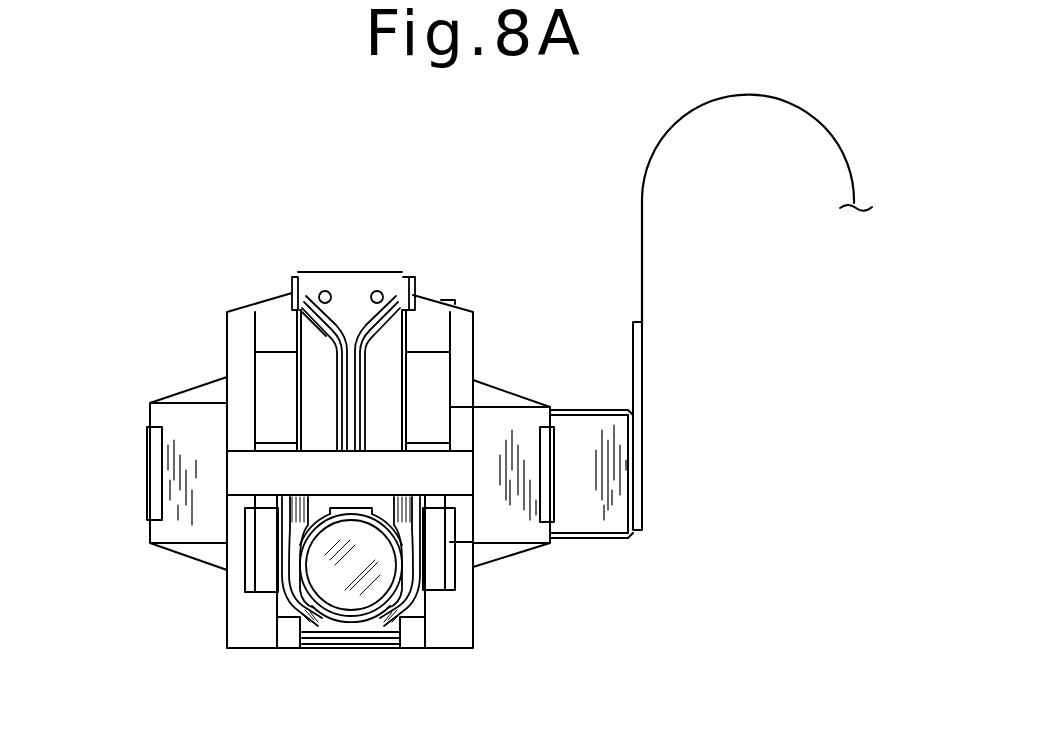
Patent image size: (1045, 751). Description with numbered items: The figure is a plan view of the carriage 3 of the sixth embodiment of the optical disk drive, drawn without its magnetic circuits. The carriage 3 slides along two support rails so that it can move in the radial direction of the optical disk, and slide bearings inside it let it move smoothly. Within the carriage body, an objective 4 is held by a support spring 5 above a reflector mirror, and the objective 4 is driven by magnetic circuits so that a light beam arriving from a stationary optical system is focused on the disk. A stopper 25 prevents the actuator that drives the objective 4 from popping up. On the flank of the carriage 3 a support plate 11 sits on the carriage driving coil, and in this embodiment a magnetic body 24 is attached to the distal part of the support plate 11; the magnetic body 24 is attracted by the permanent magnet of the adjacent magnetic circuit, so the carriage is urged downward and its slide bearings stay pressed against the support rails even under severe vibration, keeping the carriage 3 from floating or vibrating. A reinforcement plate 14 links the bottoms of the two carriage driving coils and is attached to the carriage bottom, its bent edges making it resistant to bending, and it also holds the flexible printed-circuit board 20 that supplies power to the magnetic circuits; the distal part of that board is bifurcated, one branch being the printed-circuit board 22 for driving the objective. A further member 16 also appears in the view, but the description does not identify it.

The carriage 3 is at (173, 283).
The support spring 5 is at (316, 356).
The printed-circuit board for driving the objective 22 is at (357, 390).
The stopper 25 is at (243, 473).
The objective 4 is at (358, 588).
The support plate 11 is at (498, 435).
The magnetic body 24 is at (545, 483).
The reinforcement plate 14 is at (587, 452).
The plate 16 is at (613, 543).
The flexible printed-circuit board 20 is at (653, 152).